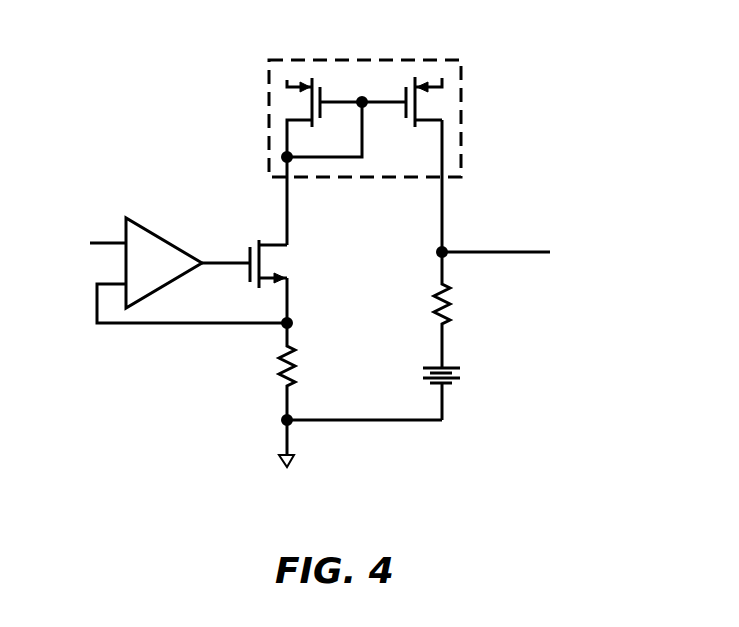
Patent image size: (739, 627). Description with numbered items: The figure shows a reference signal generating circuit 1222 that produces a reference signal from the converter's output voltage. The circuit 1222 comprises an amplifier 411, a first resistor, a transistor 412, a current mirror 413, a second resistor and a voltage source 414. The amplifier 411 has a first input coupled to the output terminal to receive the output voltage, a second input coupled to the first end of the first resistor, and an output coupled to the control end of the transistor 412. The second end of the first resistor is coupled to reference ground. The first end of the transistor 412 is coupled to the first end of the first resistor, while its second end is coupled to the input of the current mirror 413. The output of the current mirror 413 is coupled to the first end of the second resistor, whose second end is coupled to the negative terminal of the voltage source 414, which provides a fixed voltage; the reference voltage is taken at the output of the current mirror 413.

The amplifier 411 is at (164, 240).
The transistor 412 is at (290, 270).
The current mirror 413 is at (268, 62).
The voltage source 414 is at (461, 370).
The reference signal generating circuit 1222 is at (325, 257).